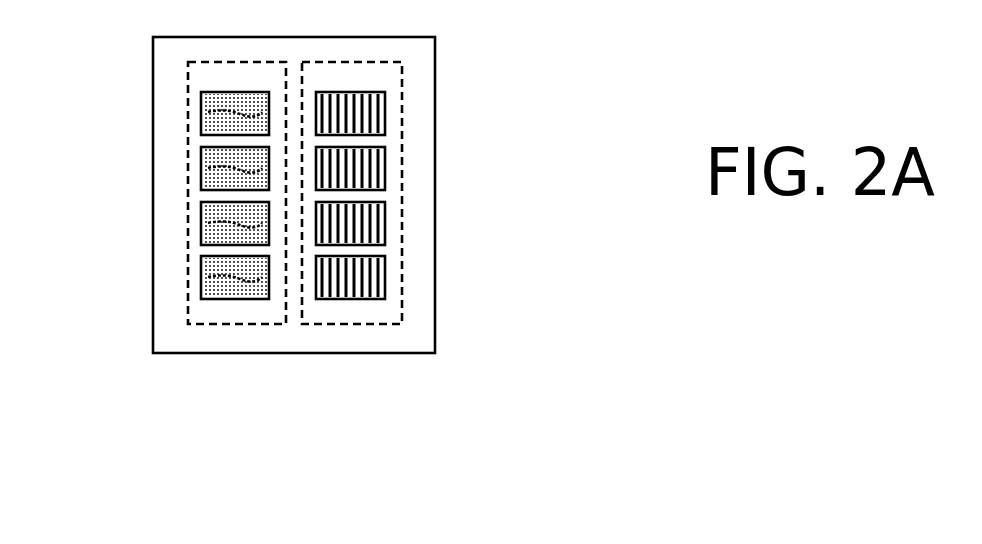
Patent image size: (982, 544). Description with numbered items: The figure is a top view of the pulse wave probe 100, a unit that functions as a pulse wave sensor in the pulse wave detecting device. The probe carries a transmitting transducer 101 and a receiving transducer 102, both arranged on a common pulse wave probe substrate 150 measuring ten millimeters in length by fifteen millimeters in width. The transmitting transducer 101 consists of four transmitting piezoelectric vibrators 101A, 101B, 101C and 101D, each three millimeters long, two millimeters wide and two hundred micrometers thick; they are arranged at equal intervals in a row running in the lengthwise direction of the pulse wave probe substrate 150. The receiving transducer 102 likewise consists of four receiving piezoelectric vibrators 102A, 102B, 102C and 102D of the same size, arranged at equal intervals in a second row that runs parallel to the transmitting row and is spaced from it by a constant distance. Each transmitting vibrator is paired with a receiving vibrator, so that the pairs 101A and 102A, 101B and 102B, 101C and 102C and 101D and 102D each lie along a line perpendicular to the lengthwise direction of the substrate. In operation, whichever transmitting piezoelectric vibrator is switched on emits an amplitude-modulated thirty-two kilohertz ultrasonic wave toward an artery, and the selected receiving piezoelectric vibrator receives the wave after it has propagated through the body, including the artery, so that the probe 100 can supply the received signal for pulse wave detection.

The pulse wave probe 100 is at (121, 388).
The transmitting transducer 101 is at (356, 62).
The transmitting piezoelectric vibrator 101A is at (385, 110).
The transmitting piezoelectric vibrator 101B is at (385, 163).
The transmitting piezoelectric vibrator 101C is at (385, 218).
The transmitting piezoelectric vibrator 101D is at (385, 273).
The receiving transducer 102 is at (240, 62).
The receiving piezoelectric vibrator 102A is at (201, 107).
The receiving piezoelectric vibrator 102B is at (201, 167).
The receiving piezoelectric vibrator 102C is at (201, 219).
The receiving piezoelectric vibrator 102D is at (201, 274).
The pulse wave probe substrate 150 is at (408, 337).